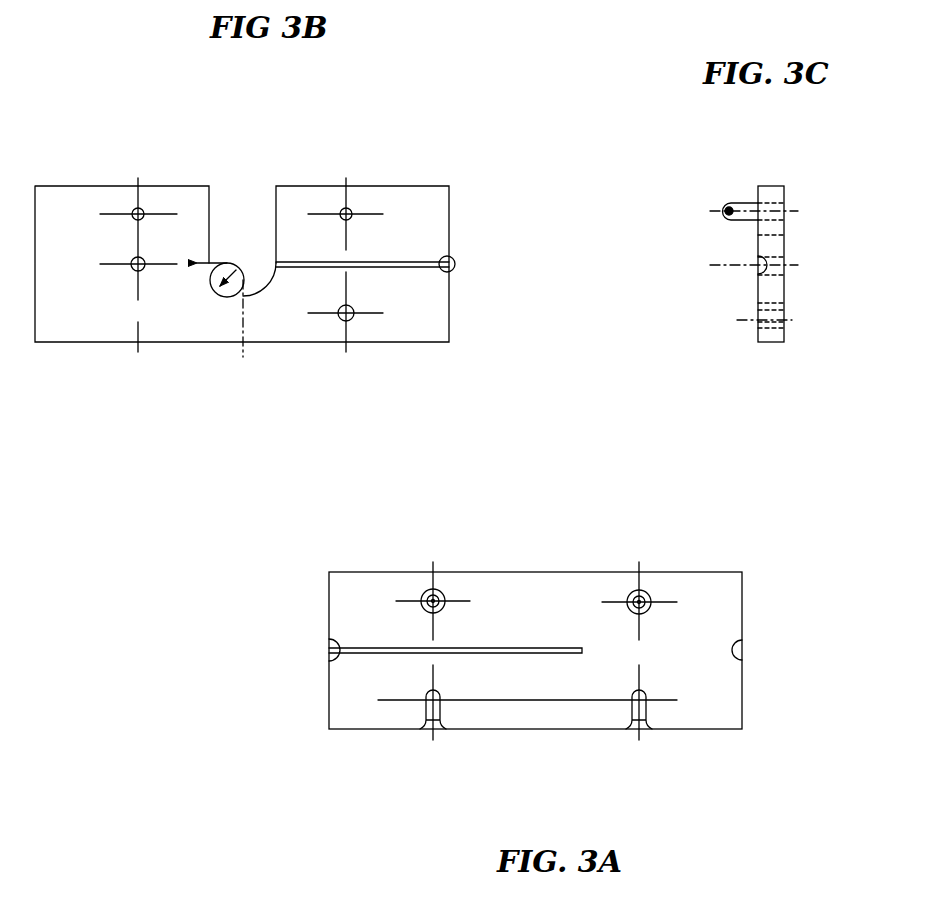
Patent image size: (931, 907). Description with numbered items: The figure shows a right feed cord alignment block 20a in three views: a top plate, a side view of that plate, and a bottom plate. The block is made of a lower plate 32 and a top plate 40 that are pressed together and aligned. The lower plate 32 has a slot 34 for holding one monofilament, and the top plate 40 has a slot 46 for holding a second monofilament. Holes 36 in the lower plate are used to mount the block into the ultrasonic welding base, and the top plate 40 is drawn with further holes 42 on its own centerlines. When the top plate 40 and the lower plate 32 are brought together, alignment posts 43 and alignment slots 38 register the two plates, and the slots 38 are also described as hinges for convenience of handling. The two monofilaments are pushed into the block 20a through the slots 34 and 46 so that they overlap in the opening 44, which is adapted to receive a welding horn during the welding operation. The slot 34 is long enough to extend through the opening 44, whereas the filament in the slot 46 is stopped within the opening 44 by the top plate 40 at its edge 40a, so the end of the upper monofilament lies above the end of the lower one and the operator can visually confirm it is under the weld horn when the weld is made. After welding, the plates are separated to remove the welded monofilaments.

In FIG. 3A, the right feed cord alignment block 20a is at (717, 353).
In FIG. 3A, the lower plate 32 is at (722, 693).
In FIG. 3A, the slot 34 is at (370, 653).
In FIG. 3A, the holes 36 is at (424, 594).
In FIG. 3A, the alignment slots 38 is at (442, 720).
In FIG. 3B, the top plate 40 is at (193, 325).
In FIG. 3B, the edge 40a is at (238, 292).
In FIG. 3B, the holes 42 is at (138, 207).
In FIG. 3C, the alignment posts 43 is at (735, 208).
In FIG. 3B, the opening 44 is at (247, 222).
In FIG. 3B, the slot 46 is at (397, 267).